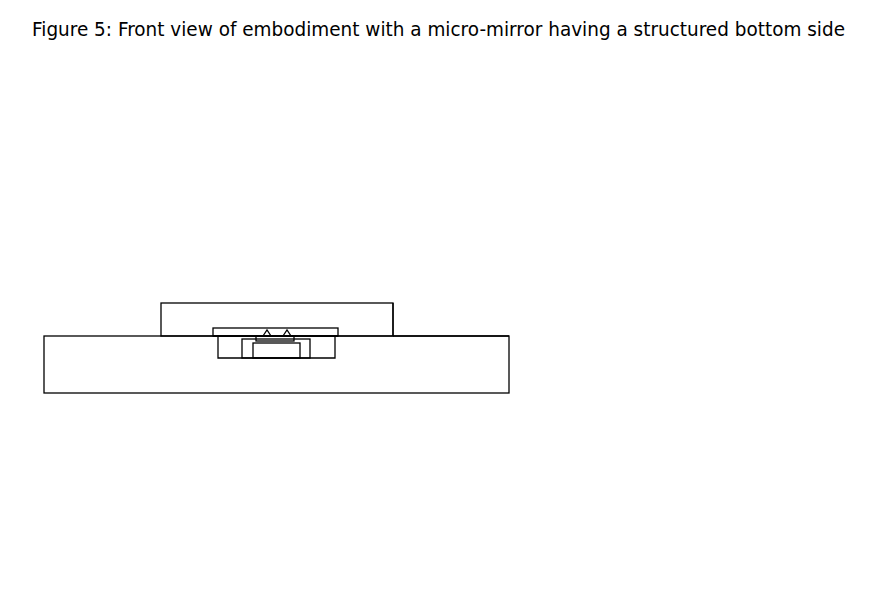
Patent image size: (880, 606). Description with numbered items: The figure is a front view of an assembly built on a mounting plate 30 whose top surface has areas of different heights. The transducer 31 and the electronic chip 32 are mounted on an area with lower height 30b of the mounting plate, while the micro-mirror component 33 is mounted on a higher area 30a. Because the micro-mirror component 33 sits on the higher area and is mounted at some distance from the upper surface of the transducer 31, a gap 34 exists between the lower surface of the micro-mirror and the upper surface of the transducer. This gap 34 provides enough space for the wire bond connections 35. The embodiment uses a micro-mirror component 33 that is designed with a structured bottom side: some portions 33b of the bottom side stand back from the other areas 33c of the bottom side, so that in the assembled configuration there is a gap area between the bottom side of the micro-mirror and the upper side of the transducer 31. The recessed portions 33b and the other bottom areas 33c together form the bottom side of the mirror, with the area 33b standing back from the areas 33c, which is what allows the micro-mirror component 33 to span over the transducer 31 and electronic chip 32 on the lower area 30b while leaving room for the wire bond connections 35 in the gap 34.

The mounting plate 30 is at (482, 366).
The higher area 30a is at (448, 334).
The area with lower height 30b is at (318, 358).
The transducer 31 is at (273, 353).
The electronic chip 32 is at (247, 352).
The micro-mirror component 33 is at (347, 313).
The bottom side portions standing back 33b is at (278, 331).
The bottom side areas 33c is at (366, 334).
The gap 34 is at (218, 329).
The wire bond connections 35 is at (268, 335).